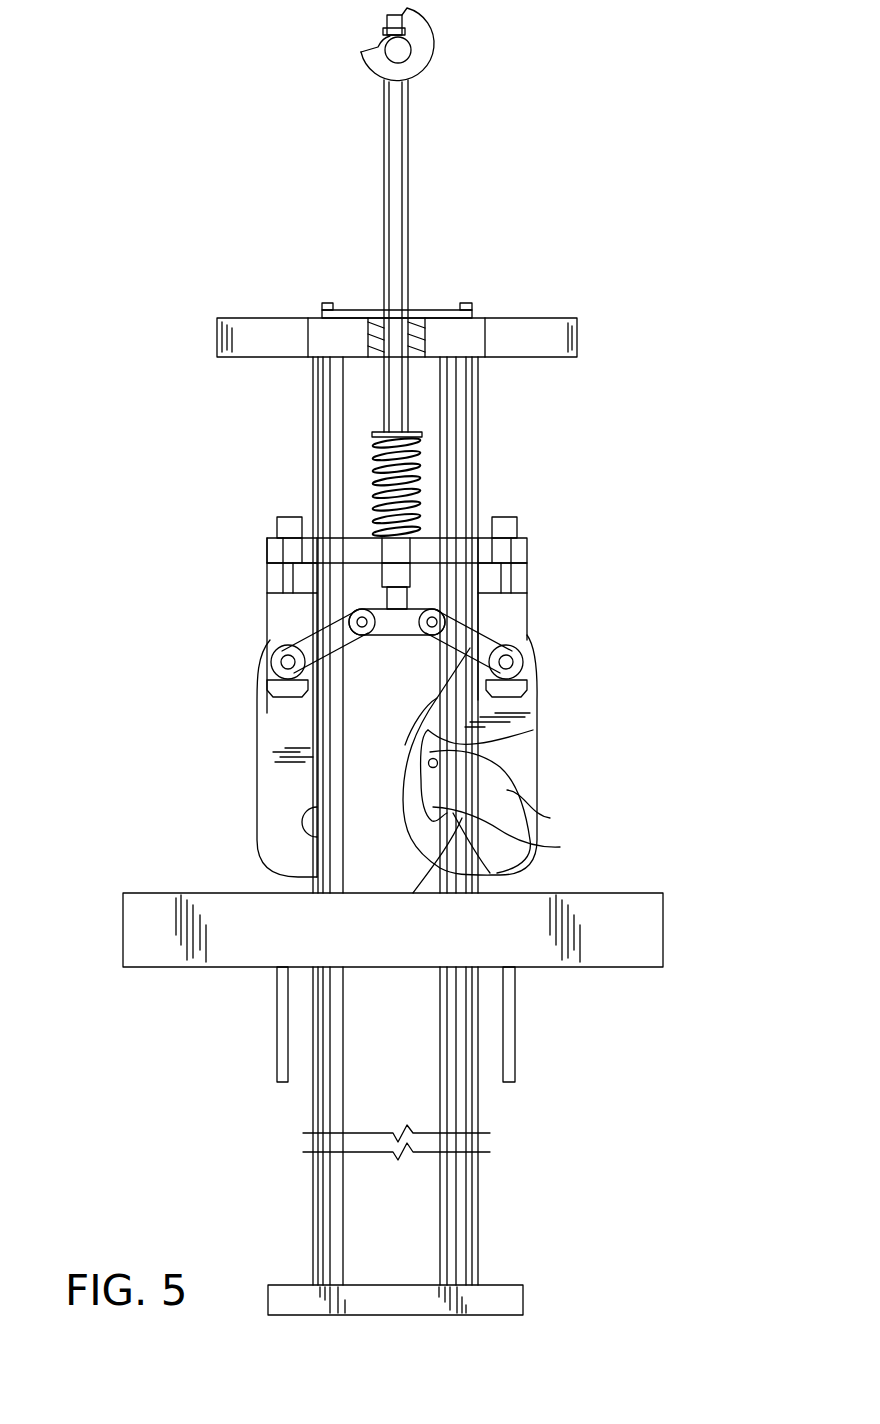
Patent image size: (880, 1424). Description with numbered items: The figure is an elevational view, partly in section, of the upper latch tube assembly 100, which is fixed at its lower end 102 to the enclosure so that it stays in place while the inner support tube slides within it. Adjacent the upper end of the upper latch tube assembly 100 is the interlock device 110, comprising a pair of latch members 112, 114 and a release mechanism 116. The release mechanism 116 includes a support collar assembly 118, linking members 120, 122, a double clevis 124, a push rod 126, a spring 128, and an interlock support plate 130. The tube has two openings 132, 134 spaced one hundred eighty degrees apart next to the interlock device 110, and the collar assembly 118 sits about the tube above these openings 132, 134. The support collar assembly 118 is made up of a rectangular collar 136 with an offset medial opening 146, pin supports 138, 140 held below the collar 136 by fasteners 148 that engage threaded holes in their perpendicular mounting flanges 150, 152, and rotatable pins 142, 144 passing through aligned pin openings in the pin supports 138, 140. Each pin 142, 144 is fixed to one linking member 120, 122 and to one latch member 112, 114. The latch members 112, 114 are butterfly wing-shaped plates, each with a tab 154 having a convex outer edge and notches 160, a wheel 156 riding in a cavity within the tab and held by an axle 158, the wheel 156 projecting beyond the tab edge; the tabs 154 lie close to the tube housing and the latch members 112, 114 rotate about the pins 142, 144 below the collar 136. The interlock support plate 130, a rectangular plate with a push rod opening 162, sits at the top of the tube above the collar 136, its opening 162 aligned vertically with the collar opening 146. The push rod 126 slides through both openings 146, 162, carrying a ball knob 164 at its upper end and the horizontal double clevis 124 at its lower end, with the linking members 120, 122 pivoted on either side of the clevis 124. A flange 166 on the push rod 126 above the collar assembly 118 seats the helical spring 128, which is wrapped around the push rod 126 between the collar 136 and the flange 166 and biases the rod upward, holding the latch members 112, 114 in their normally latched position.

The upper latch tube assembly 100 is at (540, 1059).
The lower end 102 is at (525, 1297).
The interlock device 110 is at (225, 856).
The latch member 112 is at (550, 818).
The latch member 114 is at (272, 738).
The release mechanism 116 is at (212, 545).
The support collar assembly 118 is at (445, 533).
The linking member 120 is at (503, 622).
The linking member 122 is at (273, 632).
The double clevis 124 is at (388, 635).
The push rod 126 is at (408, 155).
The spring 128 is at (418, 483).
The interlock support plate 130 is at (560, 318).
The opening 132 is at (437, 698).
The opening 134 is at (300, 832).
The collar 136 is at (528, 550).
The pin support 138 is at (527, 633).
The pin support 140 is at (267, 613).
The pin 142 is at (528, 670).
The pin 144 is at (263, 670).
The medial opening 146 is at (382, 550).
The fasteners 148 is at (277, 522).
The mounting flange 150 is at (265, 585).
The mounting flange 152 is at (527, 588).
The tab 154 is at (533, 730).
The wheel 156 is at (510, 770).
The axle 158 is at (560, 847).
The notch 160 is at (420, 893).
The push rod opening 162 is at (418, 317).
The ball knob 164 is at (427, 40).
The flange 166 is at (425, 434).